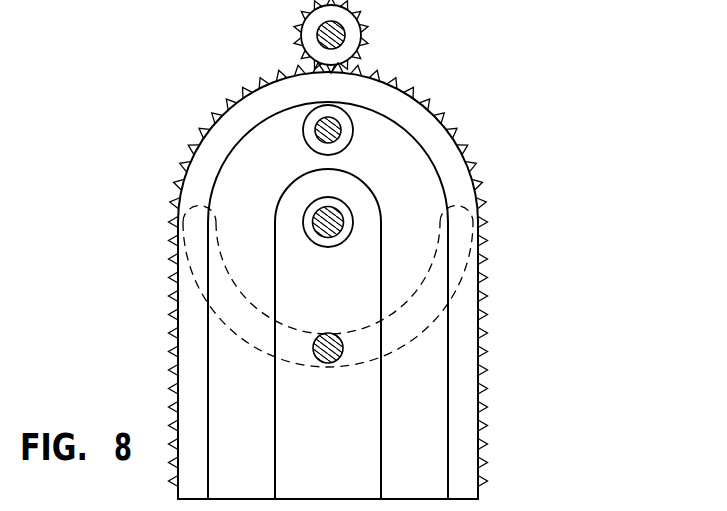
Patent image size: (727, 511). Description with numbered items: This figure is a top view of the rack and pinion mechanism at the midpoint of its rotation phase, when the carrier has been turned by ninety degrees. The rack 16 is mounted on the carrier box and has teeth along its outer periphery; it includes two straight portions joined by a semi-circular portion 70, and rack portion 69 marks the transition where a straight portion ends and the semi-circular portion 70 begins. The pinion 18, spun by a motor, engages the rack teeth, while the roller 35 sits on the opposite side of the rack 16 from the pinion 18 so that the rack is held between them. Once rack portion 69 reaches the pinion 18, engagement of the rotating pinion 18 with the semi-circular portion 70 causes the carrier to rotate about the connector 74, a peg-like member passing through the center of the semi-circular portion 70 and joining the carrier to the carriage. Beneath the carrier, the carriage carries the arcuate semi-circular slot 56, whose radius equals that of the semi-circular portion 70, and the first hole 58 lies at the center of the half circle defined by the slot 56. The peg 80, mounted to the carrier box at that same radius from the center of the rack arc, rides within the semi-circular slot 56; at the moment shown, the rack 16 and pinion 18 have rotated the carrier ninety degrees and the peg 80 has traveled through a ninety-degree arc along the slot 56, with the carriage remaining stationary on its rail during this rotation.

The rack 16 is at (190, 140).
The pinion 18 is at (362, 27).
The roller 35 is at (352, 124).
The semi-circular slot 56 is at (343, 365).
The first hole 58 is at (345, 232).
The rack portion 69 is at (480, 198).
The semi-circular portion 70 is at (275, 98).
The connector 74 is at (342, 212).
The peg 80 is at (327, 363).